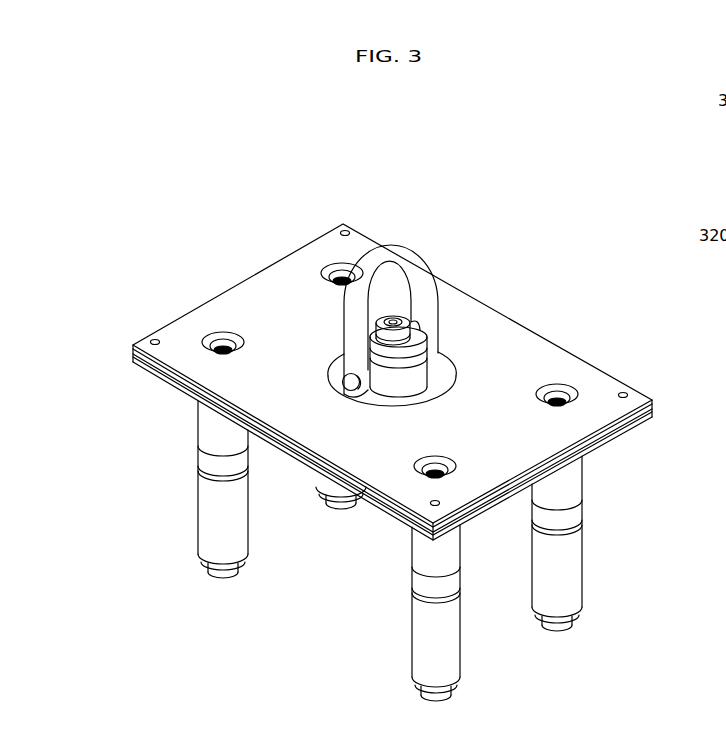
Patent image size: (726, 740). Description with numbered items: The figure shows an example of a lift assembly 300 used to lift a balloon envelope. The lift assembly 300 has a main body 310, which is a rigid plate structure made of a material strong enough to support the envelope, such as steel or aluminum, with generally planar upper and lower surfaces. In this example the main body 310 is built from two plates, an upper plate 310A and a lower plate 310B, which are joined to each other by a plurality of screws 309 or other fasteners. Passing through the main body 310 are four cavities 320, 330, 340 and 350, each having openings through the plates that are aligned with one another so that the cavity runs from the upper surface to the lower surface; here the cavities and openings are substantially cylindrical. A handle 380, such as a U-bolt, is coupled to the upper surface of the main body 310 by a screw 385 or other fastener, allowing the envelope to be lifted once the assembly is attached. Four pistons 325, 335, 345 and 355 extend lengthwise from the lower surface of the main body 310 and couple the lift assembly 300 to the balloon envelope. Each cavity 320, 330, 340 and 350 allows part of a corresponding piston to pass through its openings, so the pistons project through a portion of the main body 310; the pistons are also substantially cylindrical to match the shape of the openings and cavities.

The lift assembly 300 is at (386, 386).
The screws 309 is at (153, 342).
The main body 310 is at (180, 318).
The upper plate 310A is at (597, 390).
The lower plate 310B is at (612, 443).
The cavity 320 is at (222, 343).
The piston 325 is at (215, 520).
The cavity 330 is at (337, 262).
The piston 335 is at (327, 495).
The cavity 340 is at (418, 473).
The piston 345 is at (422, 648).
The cavity 350 is at (560, 390).
The piston 355 is at (552, 585).
The handle 380 is at (408, 246).
The screw 385 is at (407, 337).